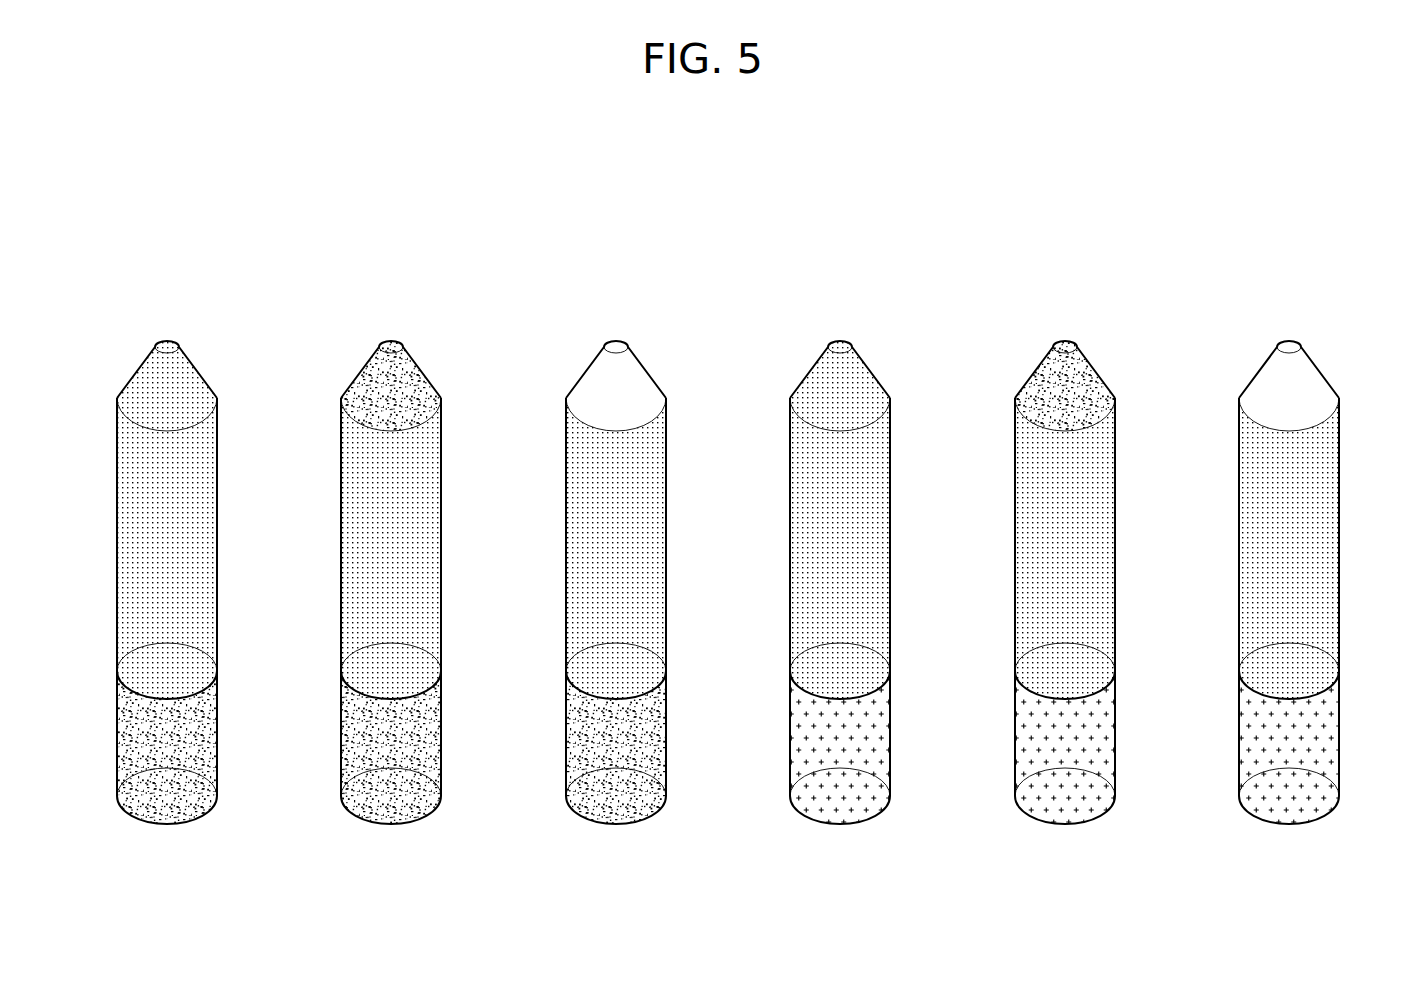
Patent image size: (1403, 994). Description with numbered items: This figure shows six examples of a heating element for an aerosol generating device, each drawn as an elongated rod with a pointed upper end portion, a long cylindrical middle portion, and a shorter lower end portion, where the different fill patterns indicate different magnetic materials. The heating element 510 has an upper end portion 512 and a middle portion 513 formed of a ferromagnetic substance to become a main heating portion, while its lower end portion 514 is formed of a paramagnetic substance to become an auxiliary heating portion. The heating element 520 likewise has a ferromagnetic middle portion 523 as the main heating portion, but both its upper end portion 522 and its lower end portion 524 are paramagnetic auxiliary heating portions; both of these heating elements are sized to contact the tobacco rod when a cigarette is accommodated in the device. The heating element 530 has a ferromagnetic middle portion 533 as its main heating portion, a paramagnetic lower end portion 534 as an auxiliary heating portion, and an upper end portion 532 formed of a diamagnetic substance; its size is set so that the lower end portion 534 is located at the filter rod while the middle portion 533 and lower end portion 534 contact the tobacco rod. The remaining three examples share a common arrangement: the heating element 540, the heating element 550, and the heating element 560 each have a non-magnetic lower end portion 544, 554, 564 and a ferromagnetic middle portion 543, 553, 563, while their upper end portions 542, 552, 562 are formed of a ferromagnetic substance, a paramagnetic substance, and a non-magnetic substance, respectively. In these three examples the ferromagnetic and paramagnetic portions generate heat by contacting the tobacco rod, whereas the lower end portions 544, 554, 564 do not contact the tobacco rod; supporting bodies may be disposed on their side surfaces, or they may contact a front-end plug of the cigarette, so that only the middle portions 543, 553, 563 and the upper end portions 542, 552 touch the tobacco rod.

The heating element 510 is at (218, 366).
The upper end portion 512 is at (152, 373).
The middle portion 513 is at (134, 532).
The lower end portion 514 is at (134, 728).
The heating element 520 is at (442, 366).
The upper end portion 522 is at (376, 373).
The middle portion 523 is at (358, 532).
The lower end portion 524 is at (358, 728).
The heating element 530 is at (667, 366).
The upper end portion 532 is at (601, 373).
The middle portion 533 is at (583, 532).
The lower end portion 534 is at (583, 728).
The heating element 540 is at (891, 366).
The upper end portion 542 is at (825, 373).
The middle portion 543 is at (807, 532).
The lower end portion 544 is at (807, 728).
The heating element 550 is at (1116, 366).
The upper end portion 552 is at (1050, 373).
The middle portion 553 is at (1032, 532).
The lower end portion 554 is at (1032, 728).
The heating element 560 is at (1340, 366).
The upper end portion 562 is at (1274, 373).
The middle portion 563 is at (1256, 532).
The lower end portion 564 is at (1256, 728).